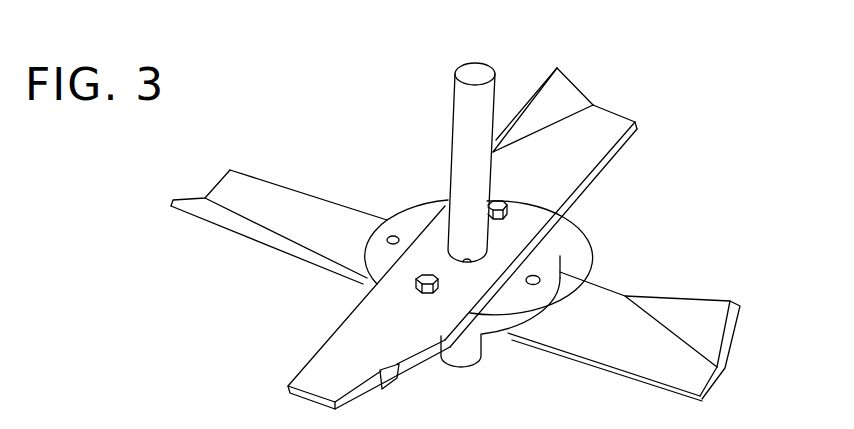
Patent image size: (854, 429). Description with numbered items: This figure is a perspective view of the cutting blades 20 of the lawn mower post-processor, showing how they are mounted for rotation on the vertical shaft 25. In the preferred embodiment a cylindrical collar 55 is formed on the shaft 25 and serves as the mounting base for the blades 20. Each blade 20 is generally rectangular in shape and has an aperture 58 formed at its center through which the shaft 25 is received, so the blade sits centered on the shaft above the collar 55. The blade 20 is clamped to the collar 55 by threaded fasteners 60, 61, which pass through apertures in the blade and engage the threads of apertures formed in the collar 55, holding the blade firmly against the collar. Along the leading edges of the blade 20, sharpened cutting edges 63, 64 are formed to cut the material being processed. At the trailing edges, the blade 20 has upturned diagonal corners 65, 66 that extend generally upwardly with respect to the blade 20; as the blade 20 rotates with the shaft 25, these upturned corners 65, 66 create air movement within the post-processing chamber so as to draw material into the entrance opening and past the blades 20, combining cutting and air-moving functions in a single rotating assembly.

The cutting blade 20 is at (676, 110).
The vertical shaft 25 is at (470, 72).
The cylindrical collar 55 is at (547, 255).
The aperture 58 is at (463, 263).
The threaded fastener 60 is at (416, 285).
The threaded fastener 61 is at (557, 213).
The sharpened cutting edge 63 is at (319, 350).
The sharpened cutting edge 64 is at (598, 165).
The upturned diagonal corner 65 is at (398, 375).
The upturned diagonal corner 66 is at (560, 95).